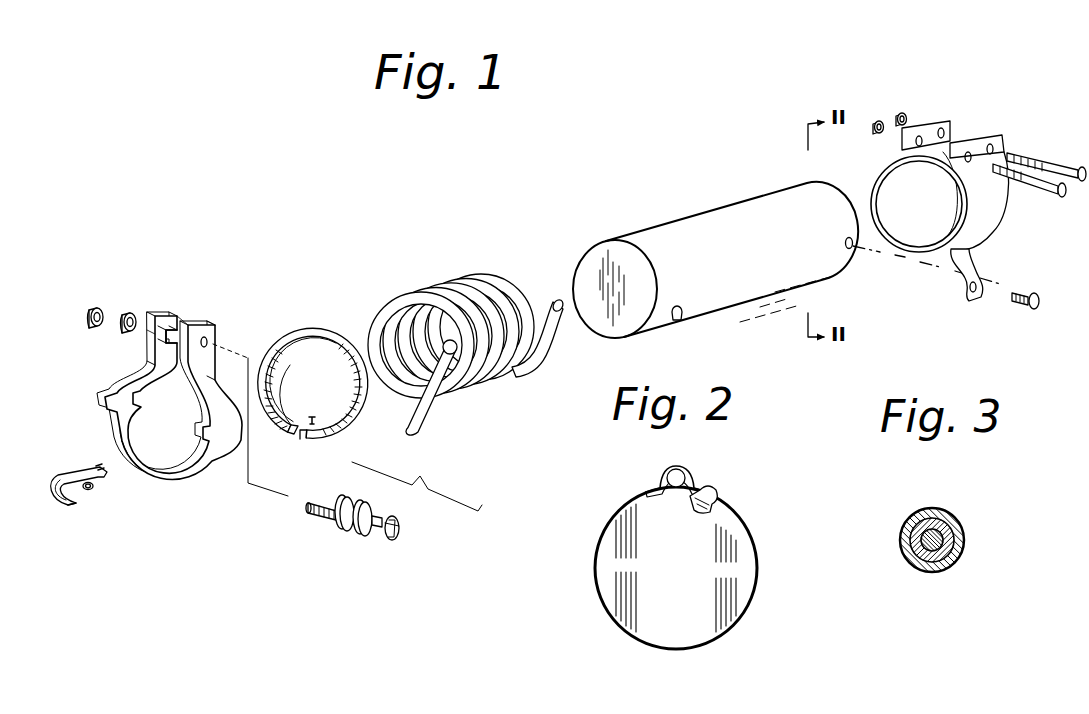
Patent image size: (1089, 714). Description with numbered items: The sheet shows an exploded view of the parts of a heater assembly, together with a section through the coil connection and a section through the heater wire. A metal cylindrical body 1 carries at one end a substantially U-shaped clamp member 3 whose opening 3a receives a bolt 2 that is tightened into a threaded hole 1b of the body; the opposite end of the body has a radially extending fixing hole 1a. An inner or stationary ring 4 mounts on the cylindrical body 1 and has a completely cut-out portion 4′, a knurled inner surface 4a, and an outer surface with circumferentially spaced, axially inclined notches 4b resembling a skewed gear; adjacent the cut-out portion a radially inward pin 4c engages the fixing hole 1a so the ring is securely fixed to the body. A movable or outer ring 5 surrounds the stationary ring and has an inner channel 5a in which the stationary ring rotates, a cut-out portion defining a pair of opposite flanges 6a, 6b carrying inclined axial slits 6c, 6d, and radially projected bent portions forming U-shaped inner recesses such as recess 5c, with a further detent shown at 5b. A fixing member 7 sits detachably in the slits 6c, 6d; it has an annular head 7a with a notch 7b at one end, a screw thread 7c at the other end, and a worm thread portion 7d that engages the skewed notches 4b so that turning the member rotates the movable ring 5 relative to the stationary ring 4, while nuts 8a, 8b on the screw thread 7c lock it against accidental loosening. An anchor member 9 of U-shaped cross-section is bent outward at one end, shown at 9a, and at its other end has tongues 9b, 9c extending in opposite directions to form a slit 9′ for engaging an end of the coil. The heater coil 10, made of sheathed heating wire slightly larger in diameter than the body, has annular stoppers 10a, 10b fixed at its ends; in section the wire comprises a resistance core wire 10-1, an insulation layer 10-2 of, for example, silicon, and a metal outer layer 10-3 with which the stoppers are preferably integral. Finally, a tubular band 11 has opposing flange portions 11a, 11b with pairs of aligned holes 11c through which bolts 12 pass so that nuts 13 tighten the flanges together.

In FIG. 1, the cylindrical body 1 is at (608, 254).
In FIG. 2, the cylindrical body 1 is at (760, 561).
In FIG. 1, the fixing hole 1a is at (682, 318).
In FIG. 1, the threaded hole 1b is at (851, 250).
In FIG. 1, the bolt 2 is at (1019, 307).
In FIG. 2, the bolt 2 is at (718, 490).
In FIG. 1, the clamp member 3 is at (976, 290).
In FIG. 2, the clamp member 3 is at (660, 480).
In FIG. 1, the opening 3a is at (968, 293).
In FIG. 1, the stationary ring 4 is at (319, 377).
In FIG. 1, the cut-out portion 4′ is at (300, 434).
In FIG. 1, the knurled inner surface 4a is at (281, 430).
In FIG. 1, the outer surface notches 4b is at (364, 396).
In FIG. 1, the pin 4c is at (312, 416).
In FIG. 1, the movable ring 5 is at (192, 389).
In FIG. 1, the channel 5a is at (141, 448).
In FIG. 1, the clamp detent 5b is at (141, 399).
In FIG. 1, the inner recess 5c is at (205, 433).
In FIG. 1, the flange 6a is at (150, 340).
In FIG. 1, the flange 6b is at (217, 322).
In FIG. 1, the slit 6c is at (174, 335).
In FIG. 1, the slit 6d is at (214, 342).
In FIG. 1, the fixing member 7 is at (394, 500).
In FIG. 1, the annular head 7a is at (398, 516).
In FIG. 1, the notch 7b is at (404, 528).
In FIG. 1, the screw thread 7c is at (334, 492).
In FIG. 1, the worm thread portion 7d is at (379, 504).
In FIG. 1, the nut 8a is at (131, 312).
In FIG. 1, the nut 8b is at (95, 306).
In FIG. 1, the anchor member 9 is at (102, 504).
In FIG. 1, the slit 9′ is at (90, 490).
In FIG. 1, the hook tip 9a is at (63, 510).
In FIG. 1, the tongue 9b is at (102, 482).
In FIG. 1, the tongue 9c is at (98, 468).
In FIG. 1, the heater coil 10 is at (466, 345).
In FIG. 2, the heater coil 10 is at (690, 475).
In FIG. 3, the heater coil 10 is at (967, 552).
In FIG. 1, the annular stopper 10a is at (562, 299).
In FIG. 1, the annular stopper 10b is at (457, 382).
In FIG. 3, the core wire 10-1 is at (958, 540).
In FIG. 3, the electric insulation layer 10-2 is at (948, 560).
In FIG. 3, the outer layer 10-3 is at (928, 562).
In FIG. 1, the band 11 is at (947, 165).
In FIG. 1, the flange portion 11a is at (937, 126).
In FIG. 1, the flange portion 11b is at (985, 141).
In FIG. 1, the aligned holes 11c is at (907, 141).
In FIG. 1, the bolts 12 is at (1045, 167).
In FIG. 1, the nuts 13 is at (899, 112).